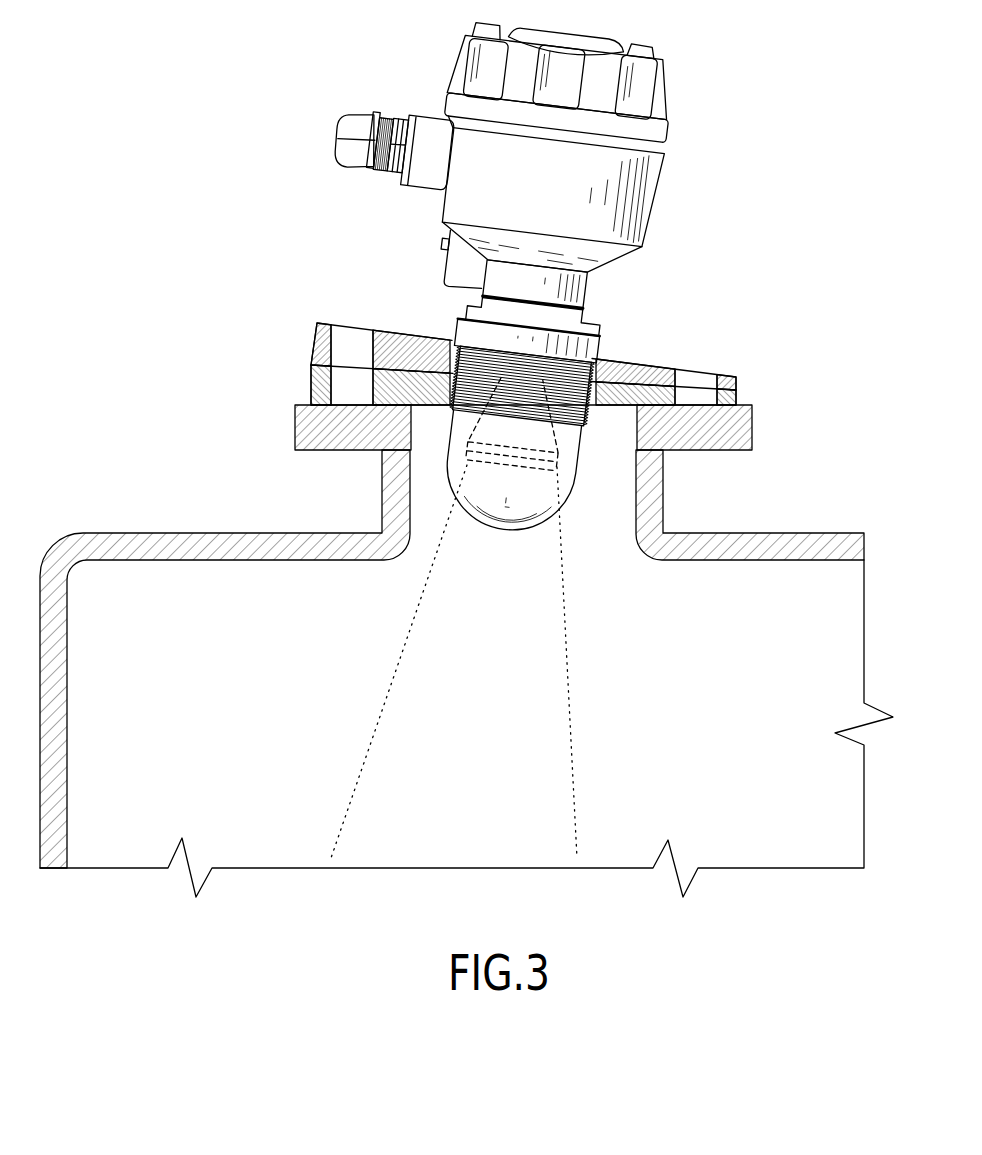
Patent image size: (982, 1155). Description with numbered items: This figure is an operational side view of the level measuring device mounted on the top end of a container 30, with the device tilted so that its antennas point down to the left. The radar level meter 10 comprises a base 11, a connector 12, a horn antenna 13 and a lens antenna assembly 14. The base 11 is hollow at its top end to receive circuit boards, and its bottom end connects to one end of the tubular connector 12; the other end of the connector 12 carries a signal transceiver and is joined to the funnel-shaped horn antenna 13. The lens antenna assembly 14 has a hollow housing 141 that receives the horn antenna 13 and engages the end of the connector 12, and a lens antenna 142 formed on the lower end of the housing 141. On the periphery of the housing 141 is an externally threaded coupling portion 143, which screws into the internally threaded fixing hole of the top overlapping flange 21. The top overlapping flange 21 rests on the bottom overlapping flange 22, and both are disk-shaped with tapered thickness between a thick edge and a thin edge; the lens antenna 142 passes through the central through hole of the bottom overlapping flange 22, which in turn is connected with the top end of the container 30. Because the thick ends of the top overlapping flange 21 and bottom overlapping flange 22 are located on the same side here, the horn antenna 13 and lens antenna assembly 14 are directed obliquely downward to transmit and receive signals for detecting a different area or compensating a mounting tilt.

The radar level meter 10 is at (516, 282).
The base 11 is at (628, 220).
The connector 12 is at (565, 317).
The horn antenna 13 is at (558, 440).
The lens antenna assembly 14 is at (503, 537).
The housing 141 is at (590, 348).
The lens antenna 142 is at (545, 503).
The coupling portion 143 is at (480, 362).
The top overlapping flange 21 is at (323, 340).
The bottom overlapping flange 22 is at (318, 380).
The container 30 is at (189, 547).